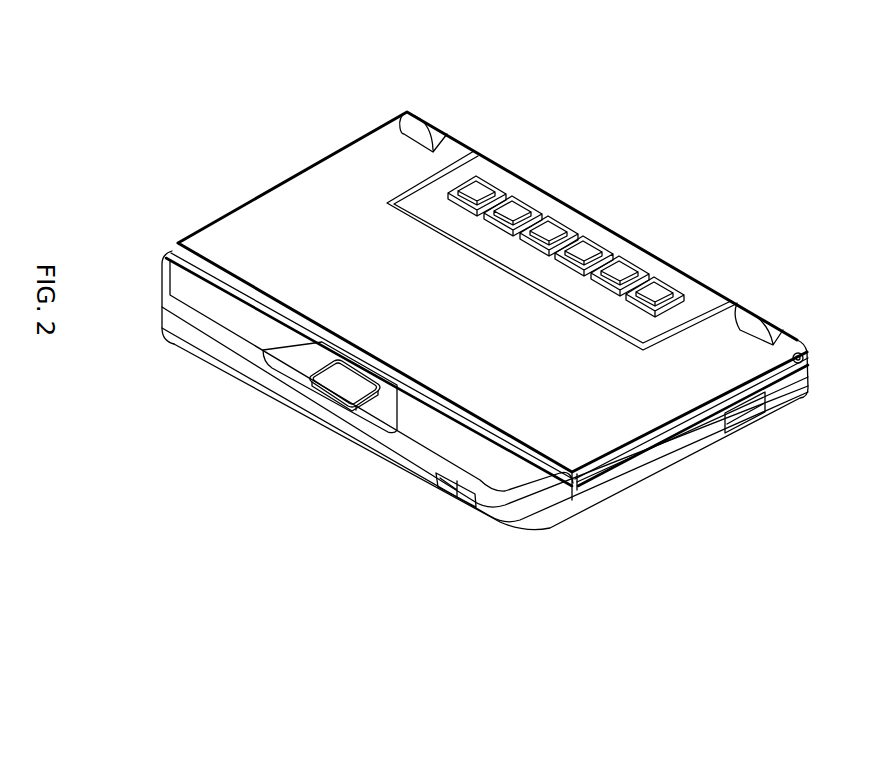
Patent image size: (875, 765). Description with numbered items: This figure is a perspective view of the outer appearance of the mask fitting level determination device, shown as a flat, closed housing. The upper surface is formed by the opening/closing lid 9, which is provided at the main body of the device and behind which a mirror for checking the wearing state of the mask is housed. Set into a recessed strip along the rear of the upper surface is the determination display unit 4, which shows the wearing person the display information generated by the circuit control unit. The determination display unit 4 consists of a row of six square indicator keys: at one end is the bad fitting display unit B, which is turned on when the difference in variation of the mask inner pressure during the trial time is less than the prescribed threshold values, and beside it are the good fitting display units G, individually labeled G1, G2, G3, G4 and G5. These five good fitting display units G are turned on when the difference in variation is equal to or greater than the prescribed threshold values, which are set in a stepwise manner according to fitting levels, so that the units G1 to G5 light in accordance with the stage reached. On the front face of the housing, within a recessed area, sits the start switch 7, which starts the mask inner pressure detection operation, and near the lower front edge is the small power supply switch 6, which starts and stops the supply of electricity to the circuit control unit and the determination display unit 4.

The opening/closing lid 9 is at (293, 207).
The determination display unit 4 is at (504, 115).
The bad fitting display unit B is at (477, 186).
The good fitting display units G is at (641, 203).
The good fitting display unit G1 is at (513, 206).
The good fitting display unit G2 is at (549, 226).
The good fitting display unit G3 is at (584, 246).
The good fitting display unit G4 is at (620, 266).
The good fitting display unit G5 is at (701, 265).
The start switch 7 is at (343, 383).
The power supply switch 6 is at (440, 485).